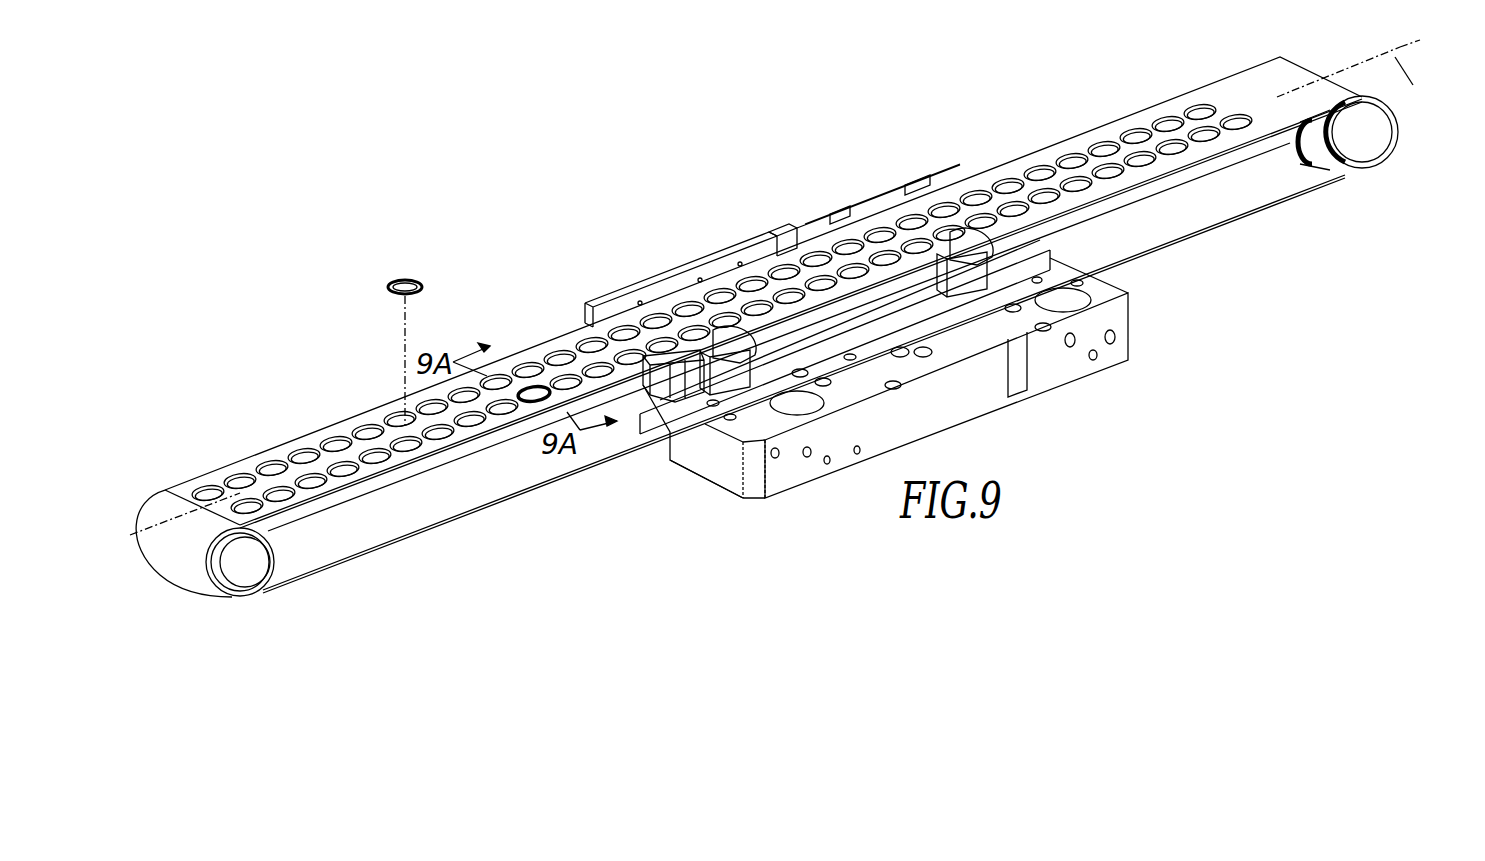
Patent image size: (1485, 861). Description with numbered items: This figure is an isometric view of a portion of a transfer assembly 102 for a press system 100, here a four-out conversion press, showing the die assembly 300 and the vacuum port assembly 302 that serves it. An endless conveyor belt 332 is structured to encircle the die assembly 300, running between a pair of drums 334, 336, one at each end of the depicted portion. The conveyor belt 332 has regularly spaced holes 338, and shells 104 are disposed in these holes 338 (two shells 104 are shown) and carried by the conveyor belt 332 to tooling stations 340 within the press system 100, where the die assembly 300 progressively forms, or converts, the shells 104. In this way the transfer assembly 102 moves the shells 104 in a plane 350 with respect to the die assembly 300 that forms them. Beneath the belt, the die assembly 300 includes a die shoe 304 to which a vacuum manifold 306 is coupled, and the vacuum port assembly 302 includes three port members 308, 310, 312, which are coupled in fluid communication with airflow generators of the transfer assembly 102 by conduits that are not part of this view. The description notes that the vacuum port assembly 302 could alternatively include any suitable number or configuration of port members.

The press system 100 is at (612, 541).
The transfer assembly 102 is at (663, 468).
The shell 104 is at (398, 280).
The die assembly 300 is at (1003, 426).
The vacuum port assembly 302 is at (1124, 277).
The die shoe 304 is at (1058, 368).
The vacuum manifold 306 is at (648, 392).
The port member 308 is at (1058, 255).
The port member 310 is at (935, 305).
The port member 312 is at (756, 356).
The endless conveyor belt 332 is at (1262, 92).
The drum 334 is at (1330, 170).
The drum 336 is at (248, 588).
The holes 338 is at (1115, 126).
The tooling stations 340 is at (770, 226).
The plane 350 is at (1419, 83).